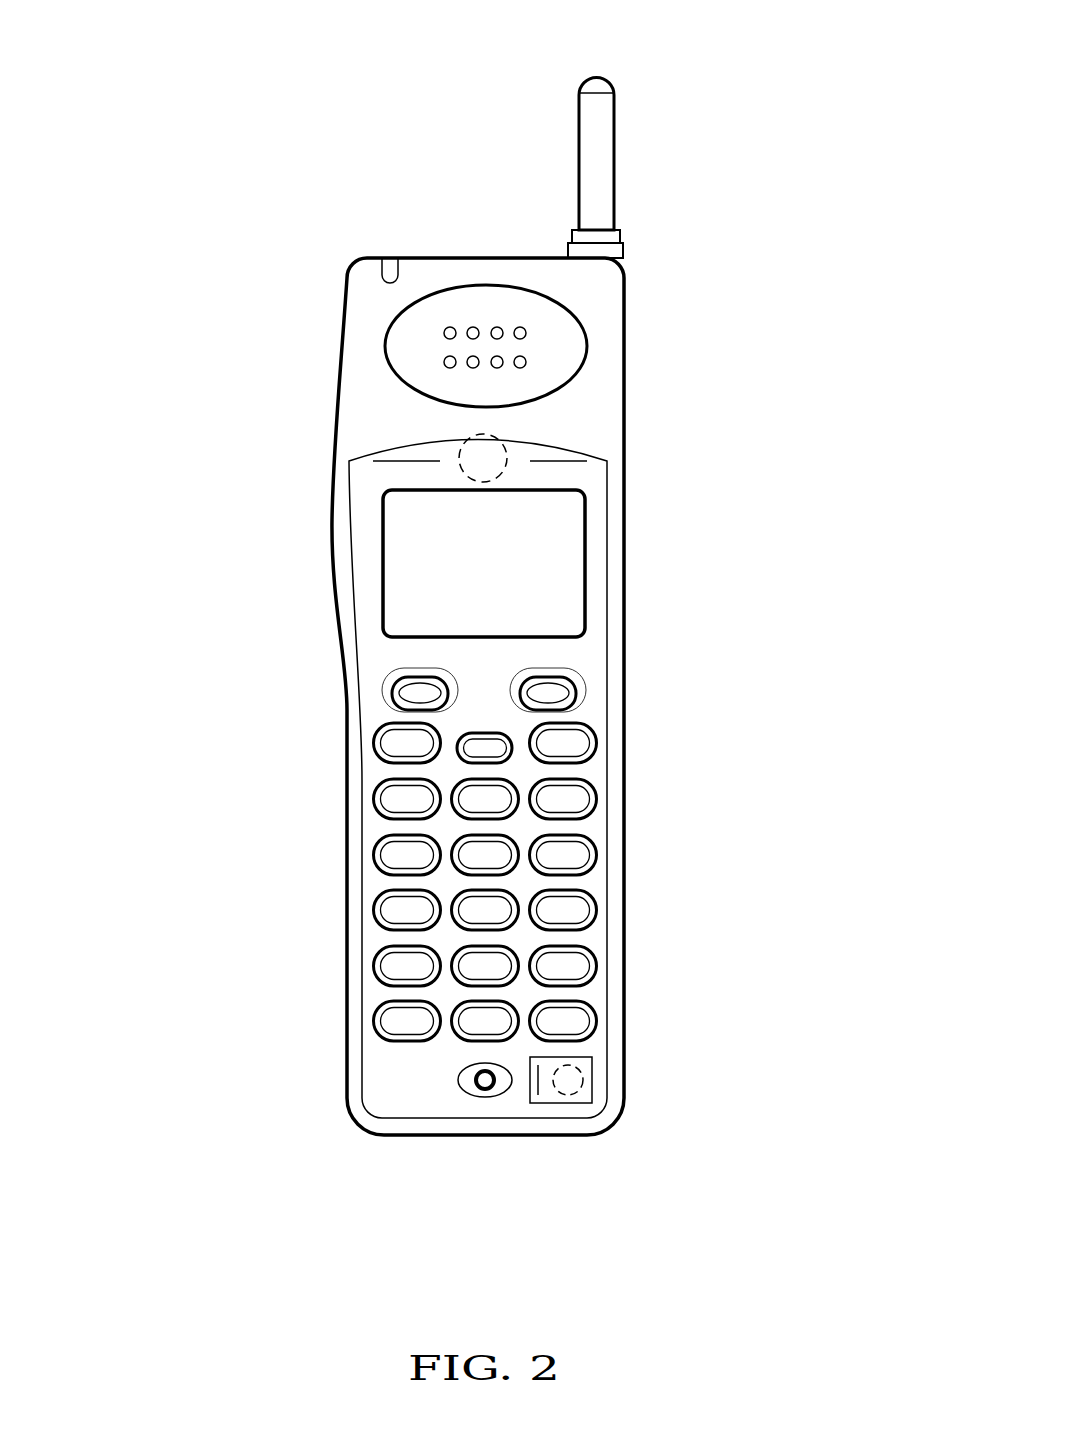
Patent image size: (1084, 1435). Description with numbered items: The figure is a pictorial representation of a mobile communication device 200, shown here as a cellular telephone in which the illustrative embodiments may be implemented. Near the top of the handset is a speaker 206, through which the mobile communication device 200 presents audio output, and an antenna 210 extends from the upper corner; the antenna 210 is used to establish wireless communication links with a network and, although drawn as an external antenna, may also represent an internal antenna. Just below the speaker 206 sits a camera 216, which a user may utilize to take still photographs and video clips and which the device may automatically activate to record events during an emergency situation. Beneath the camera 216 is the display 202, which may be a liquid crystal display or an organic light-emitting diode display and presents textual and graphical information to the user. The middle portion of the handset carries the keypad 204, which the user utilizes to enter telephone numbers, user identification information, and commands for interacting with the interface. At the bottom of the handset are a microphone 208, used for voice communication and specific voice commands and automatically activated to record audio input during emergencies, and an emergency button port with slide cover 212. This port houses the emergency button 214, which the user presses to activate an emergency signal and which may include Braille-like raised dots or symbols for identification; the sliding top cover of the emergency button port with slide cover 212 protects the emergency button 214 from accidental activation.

The mobile communication device 200 is at (285, 201).
The display 202 is at (513, 604).
The keypad 204 is at (330, 731).
The speaker 206 is at (485, 284).
The microphone 208 is at (471, 1086).
The antenna 210 is at (617, 160).
The emergency button port with slide cover 212 is at (595, 1081).
The emergency button 214 is at (569, 1096).
The camera 216 is at (503, 444).